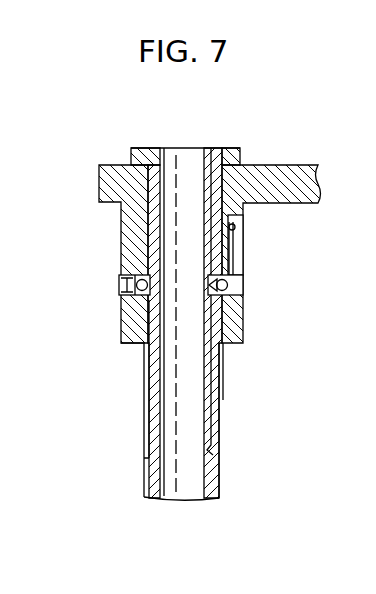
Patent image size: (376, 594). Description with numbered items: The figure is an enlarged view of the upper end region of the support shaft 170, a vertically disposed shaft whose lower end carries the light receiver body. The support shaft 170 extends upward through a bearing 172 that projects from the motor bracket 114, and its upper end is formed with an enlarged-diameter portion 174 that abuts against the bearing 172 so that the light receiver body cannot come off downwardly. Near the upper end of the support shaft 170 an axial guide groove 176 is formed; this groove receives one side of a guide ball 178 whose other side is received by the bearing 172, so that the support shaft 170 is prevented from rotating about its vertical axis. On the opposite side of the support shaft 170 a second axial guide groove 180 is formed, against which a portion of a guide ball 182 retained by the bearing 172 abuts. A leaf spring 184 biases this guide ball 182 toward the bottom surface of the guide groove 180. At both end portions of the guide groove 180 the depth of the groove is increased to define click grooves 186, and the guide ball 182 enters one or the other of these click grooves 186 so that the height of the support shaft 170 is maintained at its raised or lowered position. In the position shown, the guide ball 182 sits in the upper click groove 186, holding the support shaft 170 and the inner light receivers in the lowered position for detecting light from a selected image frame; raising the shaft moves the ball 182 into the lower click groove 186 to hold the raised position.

The motor bracket 114 is at (286, 165).
The support shaft 170 is at (220, 489).
The bearing 172 is at (120, 340).
The enlarged-diameter portion 174 is at (147, 148).
The axial guide groove 176 is at (148, 390).
The guide ball 178 is at (122, 296).
The axial guide groove 180 is at (220, 372).
The guide ball 182 is at (233, 300).
The leaf spring 184 is at (234, 252).
The click groove 186 is at (210, 285).